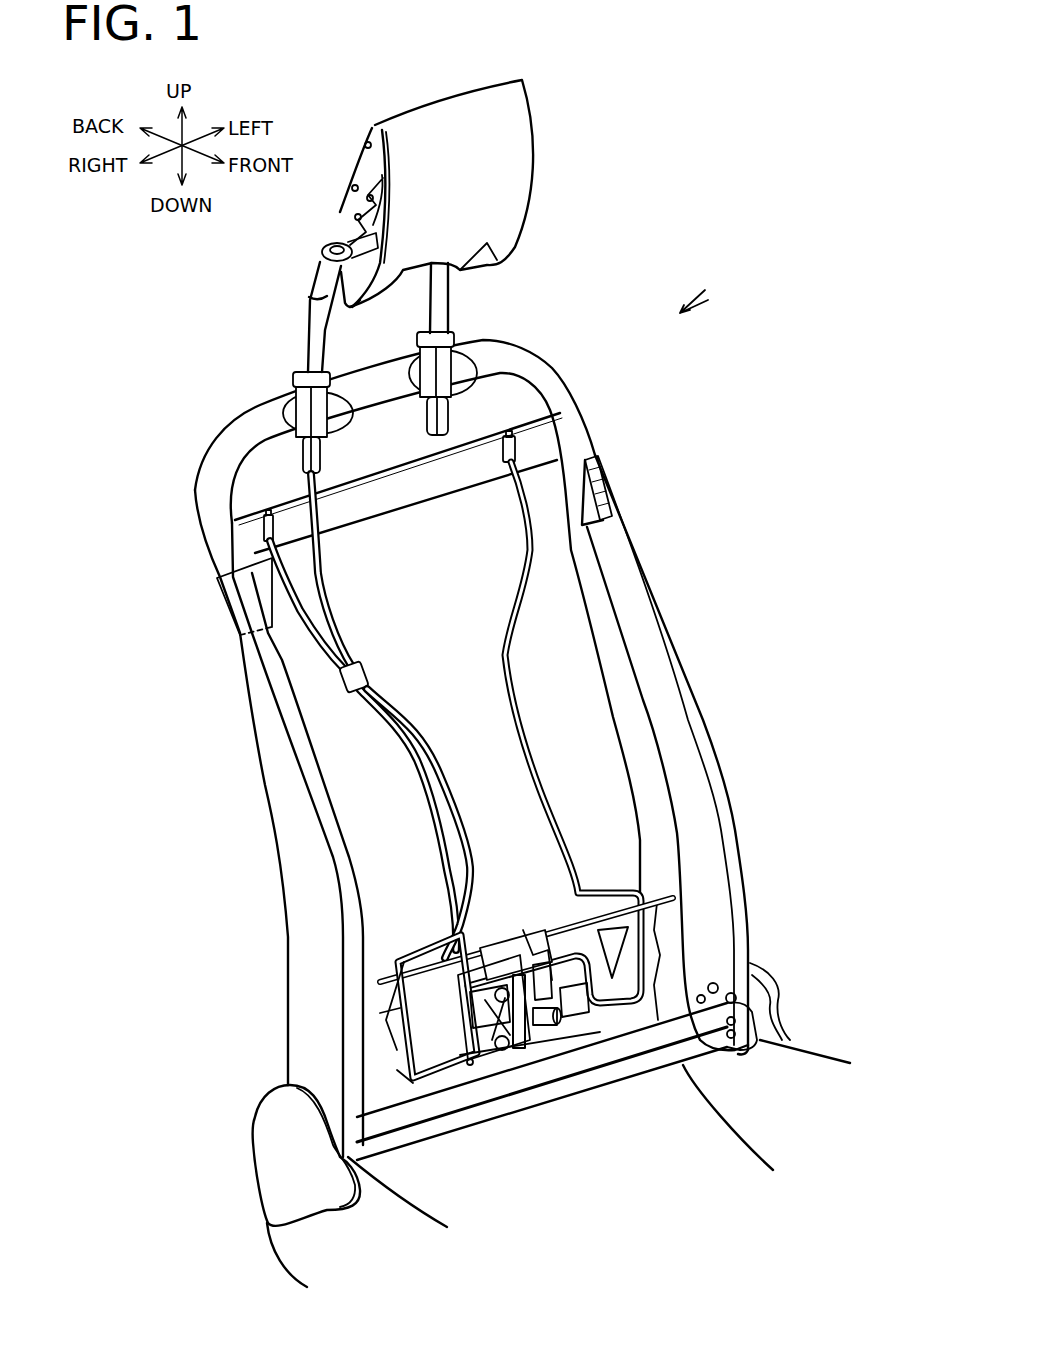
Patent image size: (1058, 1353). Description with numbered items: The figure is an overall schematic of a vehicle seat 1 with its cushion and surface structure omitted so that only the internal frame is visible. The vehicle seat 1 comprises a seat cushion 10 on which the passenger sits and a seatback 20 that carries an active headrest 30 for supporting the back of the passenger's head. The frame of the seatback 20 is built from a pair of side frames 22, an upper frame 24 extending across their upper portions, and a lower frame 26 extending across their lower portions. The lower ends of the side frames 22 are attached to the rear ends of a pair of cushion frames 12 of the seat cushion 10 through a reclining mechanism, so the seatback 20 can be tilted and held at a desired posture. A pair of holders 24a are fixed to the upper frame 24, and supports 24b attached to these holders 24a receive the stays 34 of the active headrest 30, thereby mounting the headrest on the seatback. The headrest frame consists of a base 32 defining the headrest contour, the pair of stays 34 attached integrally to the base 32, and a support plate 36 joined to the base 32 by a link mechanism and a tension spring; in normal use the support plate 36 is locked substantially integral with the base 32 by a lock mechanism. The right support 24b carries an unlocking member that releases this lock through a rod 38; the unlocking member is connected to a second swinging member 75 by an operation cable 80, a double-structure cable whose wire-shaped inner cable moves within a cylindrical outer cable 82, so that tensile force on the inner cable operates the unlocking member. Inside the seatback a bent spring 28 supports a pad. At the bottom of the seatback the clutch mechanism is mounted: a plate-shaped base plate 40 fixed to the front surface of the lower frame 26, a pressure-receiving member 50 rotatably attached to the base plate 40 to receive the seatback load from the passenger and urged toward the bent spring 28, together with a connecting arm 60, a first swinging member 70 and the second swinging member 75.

The vehicle seat 1 is at (681, 312).
The seat cushion 10 is at (554, 1121).
The cushion frames 12 is at (803, 1057).
The seatback 20 is at (492, 748).
The side frames 22 is at (663, 703).
The upper frame 24 is at (380, 395).
The holders 24a is at (325, 408).
The supports 24b is at (323, 452).
The lower frame 26 is at (623, 1013).
The bent spring 28 is at (410, 777).
The active headrest 30 is at (439, 226).
The base 32 is at (362, 167).
The stays 34 is at (307, 323).
The support plate 36 is at (510, 160).
The rod 38 is at (333, 241).
The base plate 40 is at (487, 1061).
The pressure-receiving member 50 is at (507, 953).
The connecting arm 60 is at (557, 953).
The first swinging member 70 is at (507, 1045).
The second swinging member 75 is at (445, 953).
The operation cable 80 is at (420, 723).
The outer cable 82 is at (466, 820).